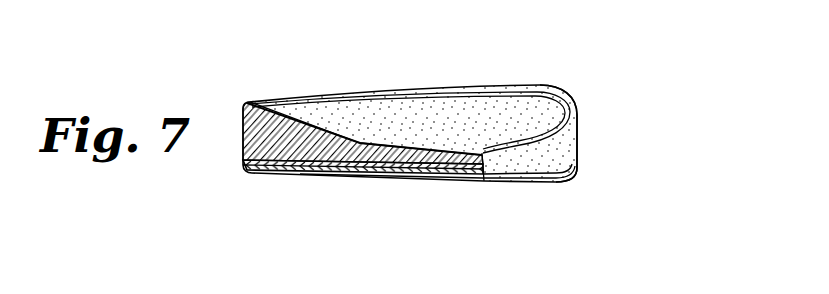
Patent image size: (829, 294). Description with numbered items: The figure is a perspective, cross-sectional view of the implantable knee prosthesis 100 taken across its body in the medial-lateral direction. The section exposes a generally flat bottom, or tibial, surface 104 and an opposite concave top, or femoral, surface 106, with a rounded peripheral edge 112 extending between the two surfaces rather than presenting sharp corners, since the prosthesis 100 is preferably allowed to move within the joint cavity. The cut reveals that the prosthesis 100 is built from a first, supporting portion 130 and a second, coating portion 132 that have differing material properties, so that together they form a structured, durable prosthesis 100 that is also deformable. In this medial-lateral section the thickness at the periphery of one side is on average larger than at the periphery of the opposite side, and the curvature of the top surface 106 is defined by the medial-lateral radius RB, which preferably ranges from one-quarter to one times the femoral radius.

The implantable knee prosthesis 100 is at (585, 62).
The bottom surface 104 is at (377, 176).
The top surface 106 is at (468, 117).
The peripheral edge 112 is at (582, 134).
The supporting portion 130 is at (280, 175).
The coating portion 132 is at (487, 132).
The medial-lateral radius RB is at (367, 138).